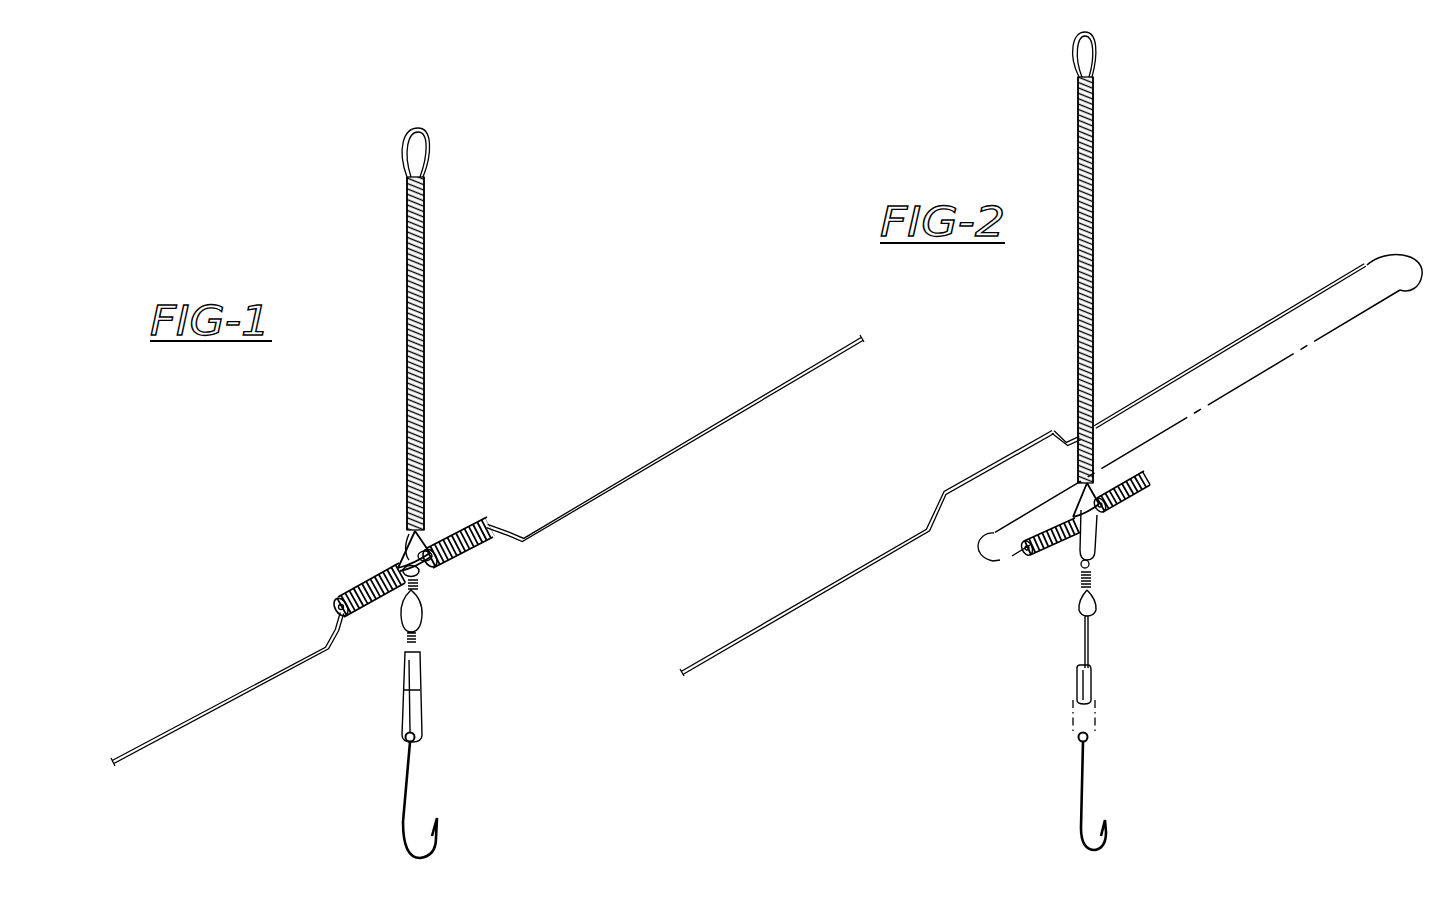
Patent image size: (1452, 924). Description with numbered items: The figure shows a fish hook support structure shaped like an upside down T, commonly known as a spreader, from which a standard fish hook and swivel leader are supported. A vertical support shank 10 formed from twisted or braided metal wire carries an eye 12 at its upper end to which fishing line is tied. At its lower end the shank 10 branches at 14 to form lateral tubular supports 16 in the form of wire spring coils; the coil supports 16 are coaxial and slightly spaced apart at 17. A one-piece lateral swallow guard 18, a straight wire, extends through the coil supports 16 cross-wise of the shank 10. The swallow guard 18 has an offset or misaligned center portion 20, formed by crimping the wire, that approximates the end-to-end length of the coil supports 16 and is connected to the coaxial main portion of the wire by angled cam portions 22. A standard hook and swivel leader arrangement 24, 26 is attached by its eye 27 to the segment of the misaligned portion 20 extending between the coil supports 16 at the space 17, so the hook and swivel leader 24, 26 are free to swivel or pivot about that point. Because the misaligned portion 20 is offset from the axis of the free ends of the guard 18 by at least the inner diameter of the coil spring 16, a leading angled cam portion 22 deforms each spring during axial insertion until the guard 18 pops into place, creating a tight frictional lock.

In FIG. 1, the vertical support shank 10 is at (426, 300).
In FIG. 2, the vertical support shank 10 is at (1094, 228).
In FIG. 1, the eye 12 is at (430, 148).
In FIG. 2, the eye 12 is at (1097, 50).
In FIG. 1, the branch point 14 is at (432, 530).
In FIG. 2, the branch point 14 is at (1075, 488).
In FIG. 1, the lateral tubular supports 16 is at (340, 588).
In FIG. 2, the lateral tubular supports 16 is at (1122, 476).
In FIG. 1, the space 17 is at (427, 568).
In FIG. 2, the space 17 is at (1099, 547).
In FIG. 1, the swallow guard 18 is at (660, 458).
In FIG. 2, the swallow guard 18 is at (1278, 318).
In FIG. 1, the misaligned center portion 20 is at (408, 537).
In FIG. 2, the misaligned center portion 20 is at (993, 466).
In FIG. 1, the angled cam portions 22 is at (326, 630).
In FIG. 2, the angled cam portions 22 is at (938, 512).
In FIG. 1, the swivel leader 24 is at (410, 612).
In FIG. 2, the swivel leader 24 is at (1086, 598).
In FIG. 1, the hook 26 is at (406, 763).
In FIG. 2, the hook 26 is at (1088, 788).
In FIG. 1, the eye 27 is at (402, 568).
In FIG. 2, the eye 27 is at (1092, 564).